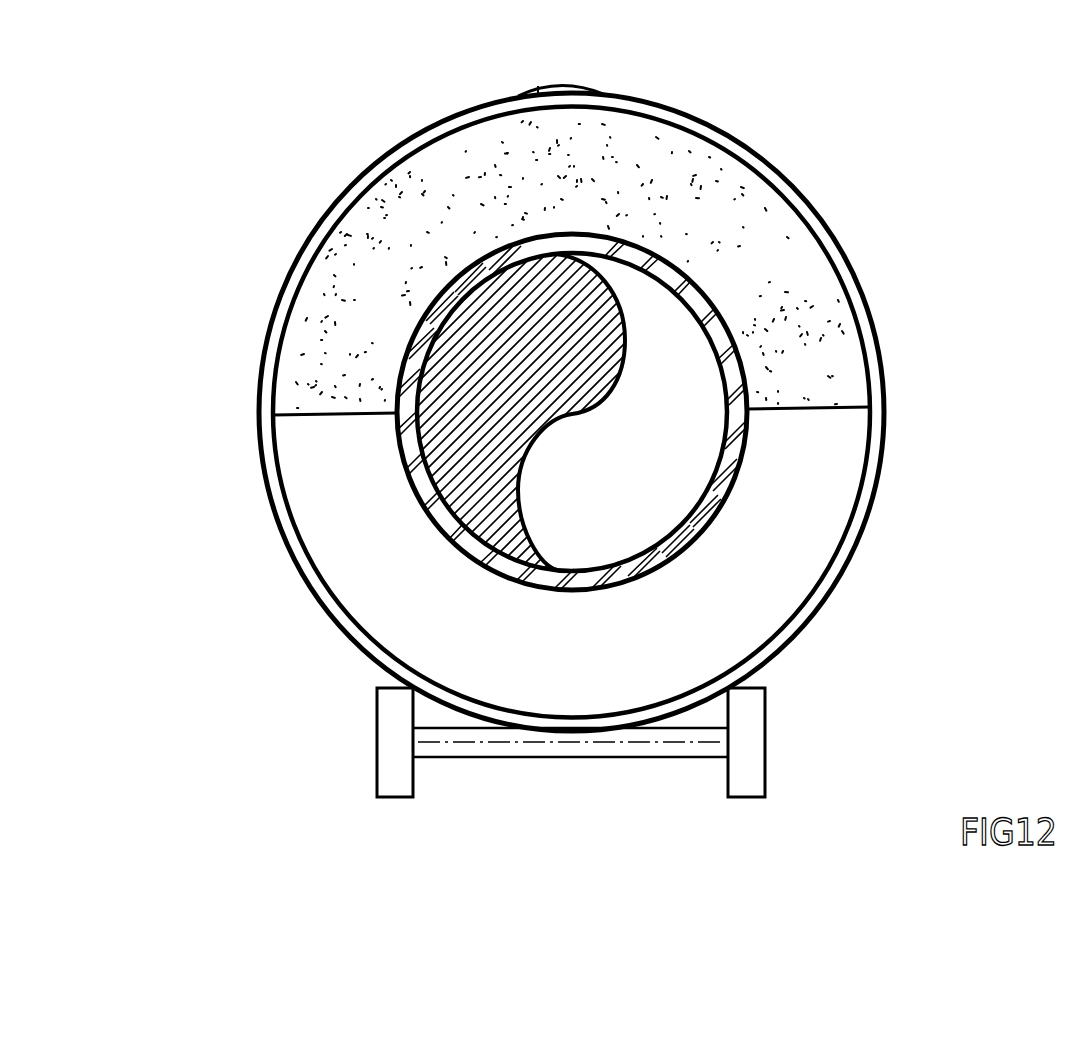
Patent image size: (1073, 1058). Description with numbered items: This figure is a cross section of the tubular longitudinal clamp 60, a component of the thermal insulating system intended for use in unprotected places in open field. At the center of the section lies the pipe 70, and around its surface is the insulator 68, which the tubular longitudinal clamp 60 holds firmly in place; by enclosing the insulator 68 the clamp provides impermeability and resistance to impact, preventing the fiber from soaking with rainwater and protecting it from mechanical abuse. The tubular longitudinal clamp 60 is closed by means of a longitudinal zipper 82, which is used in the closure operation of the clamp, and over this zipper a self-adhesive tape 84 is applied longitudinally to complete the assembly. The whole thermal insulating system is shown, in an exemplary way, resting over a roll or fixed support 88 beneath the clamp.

The tubular longitudinal clamp 60 is at (882, 455).
The insulator 68 is at (328, 354).
The pipe 70 is at (728, 328).
The longitudinal zipper 82 is at (583, 90).
The self-adhesive tape 84 is at (540, 87).
The roll or fixed support 88 is at (765, 718).